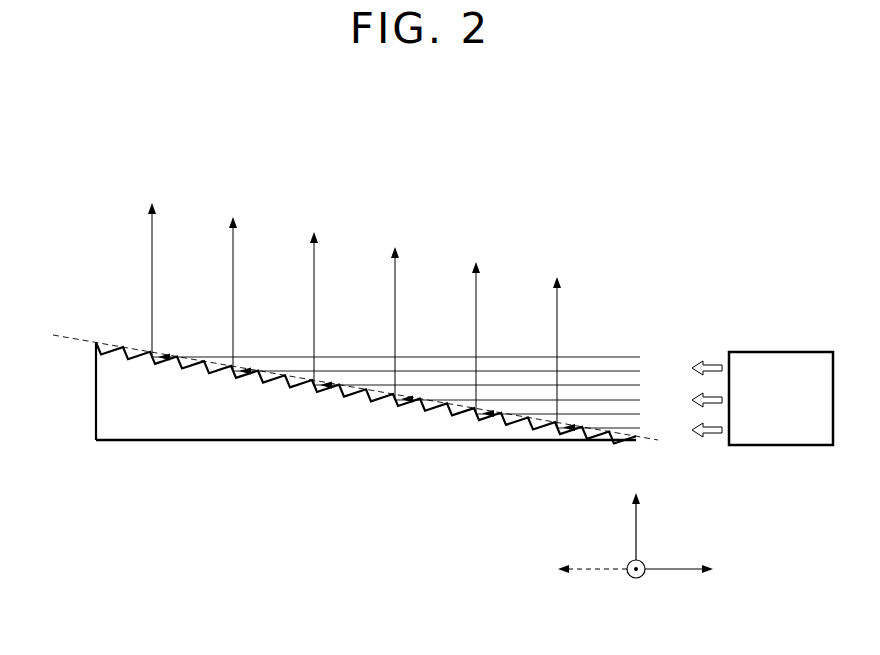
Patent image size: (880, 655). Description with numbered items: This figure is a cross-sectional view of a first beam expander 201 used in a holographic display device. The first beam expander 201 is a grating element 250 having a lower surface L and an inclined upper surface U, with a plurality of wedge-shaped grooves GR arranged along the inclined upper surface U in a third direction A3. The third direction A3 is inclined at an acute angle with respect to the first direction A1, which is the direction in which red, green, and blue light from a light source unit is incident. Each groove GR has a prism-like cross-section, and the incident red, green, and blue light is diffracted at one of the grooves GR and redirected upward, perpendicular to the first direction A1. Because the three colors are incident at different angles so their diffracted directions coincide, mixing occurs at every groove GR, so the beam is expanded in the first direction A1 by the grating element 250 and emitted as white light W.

The first beam expander 201 is at (612, 222).
The grating element 250 is at (209, 428).
The third direction A3 is at (75, 338).
The inclined upper surface U is at (93, 345).
The lower surface L is at (118, 442).
The groove GR is at (346, 395).
The white light W is at (394, 312).
The first direction A1 is at (629, 543).